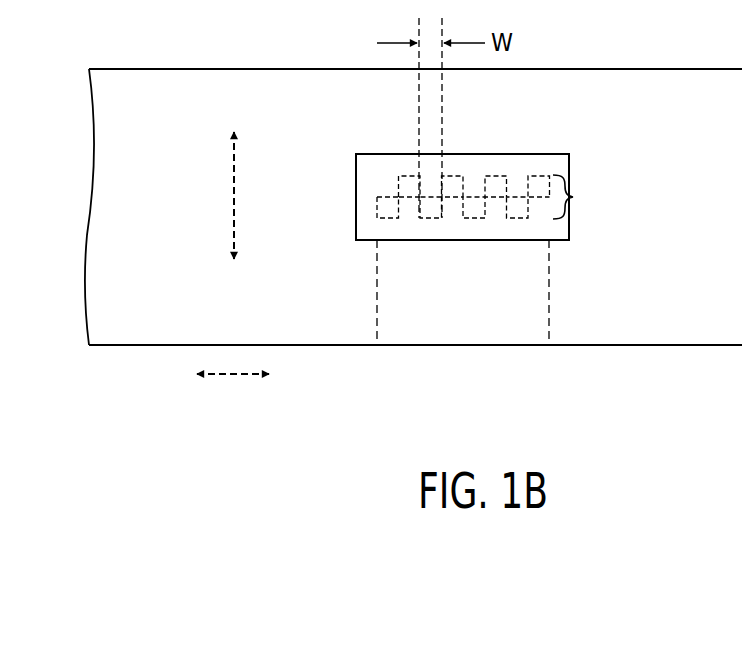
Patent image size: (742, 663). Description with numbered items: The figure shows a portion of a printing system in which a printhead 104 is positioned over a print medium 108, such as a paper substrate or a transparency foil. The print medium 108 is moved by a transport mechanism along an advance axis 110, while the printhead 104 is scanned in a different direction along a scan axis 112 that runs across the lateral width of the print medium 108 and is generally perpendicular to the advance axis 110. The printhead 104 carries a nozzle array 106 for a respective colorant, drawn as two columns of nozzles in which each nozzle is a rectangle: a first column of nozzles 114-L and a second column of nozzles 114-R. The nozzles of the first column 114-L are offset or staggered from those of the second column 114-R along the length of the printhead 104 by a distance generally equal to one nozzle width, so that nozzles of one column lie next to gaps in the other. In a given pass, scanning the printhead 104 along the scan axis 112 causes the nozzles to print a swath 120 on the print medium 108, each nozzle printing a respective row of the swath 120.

The printhead 104 is at (463, 154).
The nozzle array 106 is at (585, 197).
The print medium 108 is at (693, 345).
The advance axis 110 is at (235, 376).
The scan axis 112 is at (232, 198).
The first column of nozzles 114-L is at (354, 186).
The second column of nozzles 114-R is at (354, 207).
The swath 120 is at (549, 338).